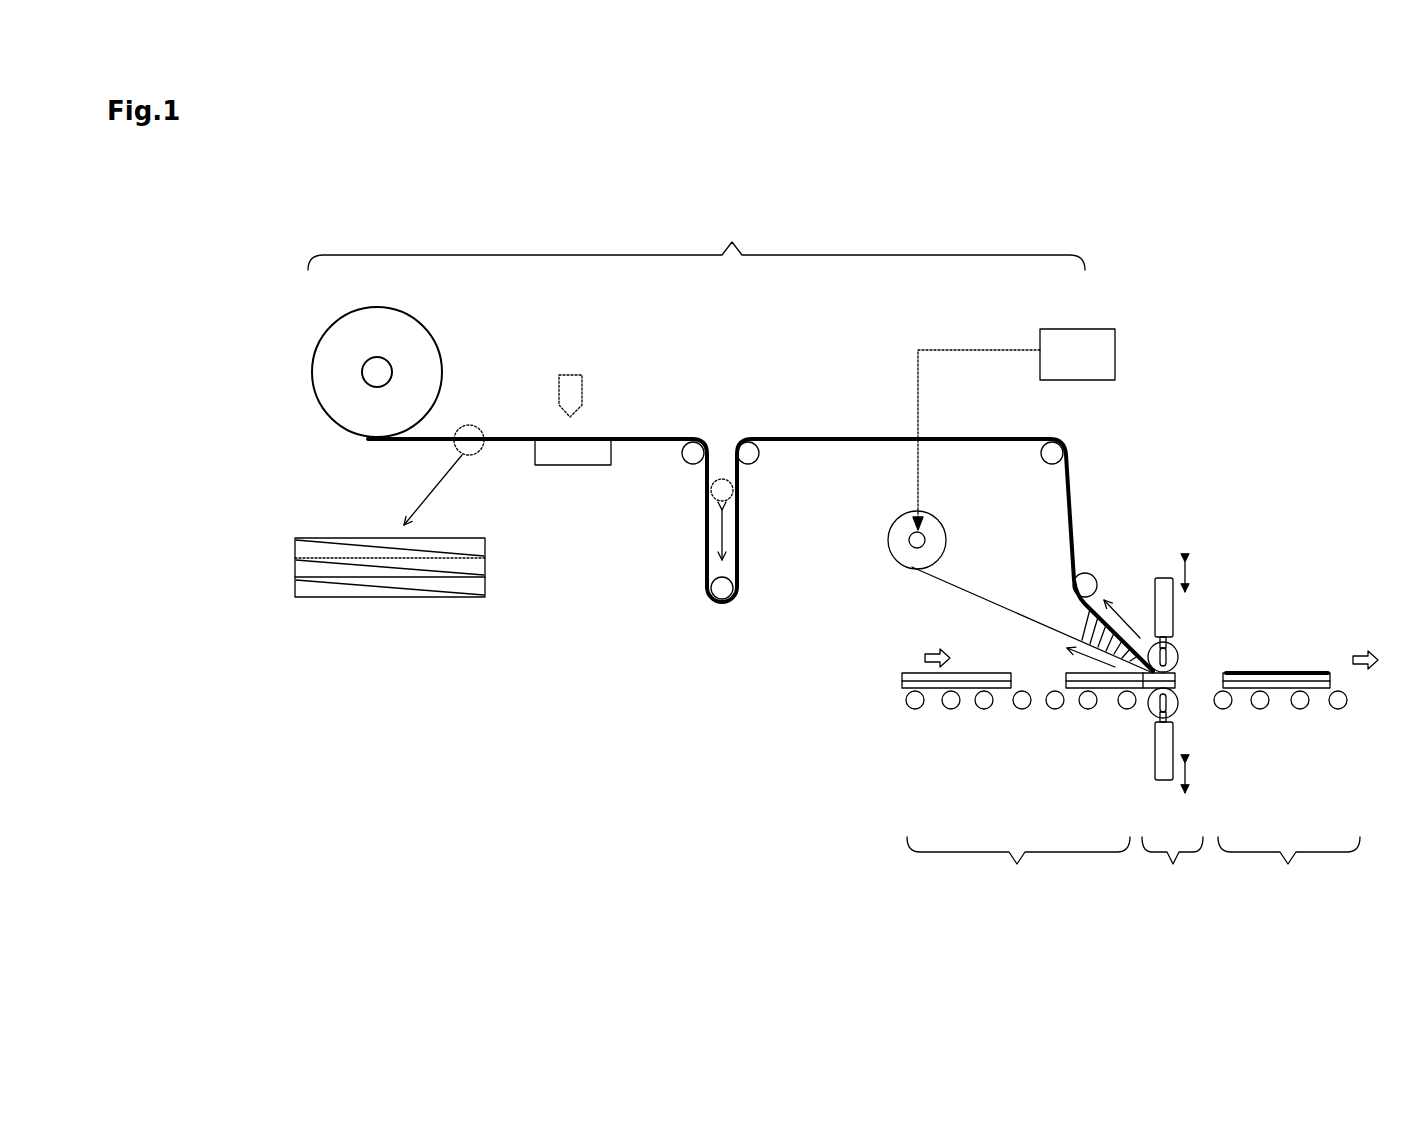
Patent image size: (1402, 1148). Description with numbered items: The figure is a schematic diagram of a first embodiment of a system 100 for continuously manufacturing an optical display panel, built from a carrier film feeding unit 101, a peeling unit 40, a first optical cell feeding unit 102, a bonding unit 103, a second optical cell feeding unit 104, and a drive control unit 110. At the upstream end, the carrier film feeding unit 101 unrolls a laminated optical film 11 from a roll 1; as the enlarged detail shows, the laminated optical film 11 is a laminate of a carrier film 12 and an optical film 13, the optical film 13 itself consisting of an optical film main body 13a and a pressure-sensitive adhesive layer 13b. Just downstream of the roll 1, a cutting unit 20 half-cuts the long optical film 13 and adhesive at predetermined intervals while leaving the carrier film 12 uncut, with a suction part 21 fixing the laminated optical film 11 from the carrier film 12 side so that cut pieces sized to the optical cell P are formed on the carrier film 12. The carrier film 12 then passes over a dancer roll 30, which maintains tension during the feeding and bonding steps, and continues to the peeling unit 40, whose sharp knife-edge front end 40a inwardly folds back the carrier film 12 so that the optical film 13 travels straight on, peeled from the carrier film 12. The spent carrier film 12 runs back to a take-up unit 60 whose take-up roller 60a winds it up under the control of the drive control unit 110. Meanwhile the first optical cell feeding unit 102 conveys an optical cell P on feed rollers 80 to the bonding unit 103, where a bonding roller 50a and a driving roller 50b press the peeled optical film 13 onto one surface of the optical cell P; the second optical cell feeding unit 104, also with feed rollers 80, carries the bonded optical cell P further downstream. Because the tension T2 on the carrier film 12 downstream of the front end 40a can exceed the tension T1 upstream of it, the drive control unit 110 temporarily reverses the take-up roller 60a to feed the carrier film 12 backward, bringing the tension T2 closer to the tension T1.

The system 100 is at (1210, 221).
The carrier film feeding unit 101 is at (696, 234).
The first optical cell feeding unit 102 is at (1018, 870).
The bonding unit 103 is at (1172, 870).
The second optical cell feeding unit 104 is at (1289, 872).
The roll 1 is at (326, 400).
The laminated optical film 11 is at (472, 453).
The carrier film 12 is at (290, 590).
The optical film 13 is at (227, 503).
The optical film main body 13a is at (294, 545).
The pressure-sensitive adhesive layer 13b is at (294, 570).
The cutting unit 20 is at (566, 383).
The suction part 21 is at (566, 468).
The dancer roll 30 is at (706, 536).
The peeling unit 40 is at (1084, 630).
The front end 40a is at (1143, 690).
The bonding roller 50a is at (1178, 655).
The driving roller 50b is at (1178, 710).
The take-up unit 60 is at (898, 535).
The take-up roller 60a is at (908, 548).
The feed rollers 80 is at (912, 708).
The drive control unit 110 is at (1014, 429).
The optical cell P is at (900, 675).
The tension T1 is at (1122, 603).
The tension T2 is at (1078, 655).